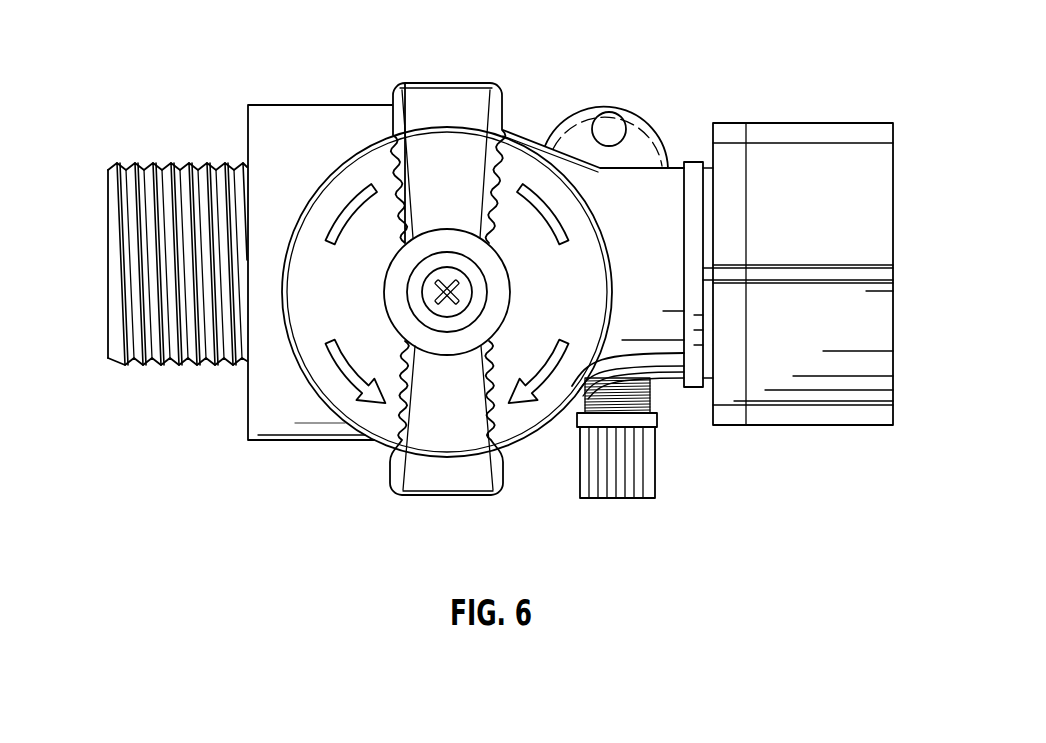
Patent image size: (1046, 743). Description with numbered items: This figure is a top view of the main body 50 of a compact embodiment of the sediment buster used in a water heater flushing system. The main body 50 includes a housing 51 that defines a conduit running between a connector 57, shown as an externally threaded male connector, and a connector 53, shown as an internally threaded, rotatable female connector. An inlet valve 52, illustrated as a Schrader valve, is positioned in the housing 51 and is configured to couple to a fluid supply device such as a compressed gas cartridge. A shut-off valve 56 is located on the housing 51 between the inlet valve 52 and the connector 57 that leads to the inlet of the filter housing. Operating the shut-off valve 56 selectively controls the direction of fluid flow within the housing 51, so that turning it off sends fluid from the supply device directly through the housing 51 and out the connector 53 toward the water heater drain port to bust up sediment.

The main body 50 is at (154, 27).
The housing 51 is at (278, 125).
The inlet valve 52 is at (630, 488).
The connector 53 is at (876, 183).
The shut-off valve 56 is at (426, 484).
The connector 57 is at (125, 235).